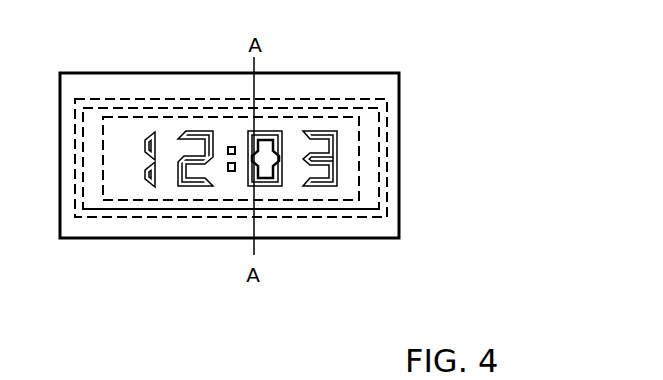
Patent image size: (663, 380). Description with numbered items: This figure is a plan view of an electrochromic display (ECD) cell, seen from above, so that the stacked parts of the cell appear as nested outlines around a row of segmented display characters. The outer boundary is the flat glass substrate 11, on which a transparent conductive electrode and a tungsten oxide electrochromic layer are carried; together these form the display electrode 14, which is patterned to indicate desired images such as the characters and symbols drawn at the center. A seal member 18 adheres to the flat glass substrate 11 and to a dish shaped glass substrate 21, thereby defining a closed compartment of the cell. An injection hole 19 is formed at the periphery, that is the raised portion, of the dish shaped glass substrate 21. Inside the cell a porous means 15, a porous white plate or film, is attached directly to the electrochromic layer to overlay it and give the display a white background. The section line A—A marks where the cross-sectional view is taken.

The flat glass substrate 11 is at (362, 88).
The display electrode 14 is at (337, 186).
The porous means 15 is at (350, 143).
The seal member 18 is at (378, 172).
The injection hole 19 is at (89, 113).
The dish shaped glass substrate 21 is at (323, 205).